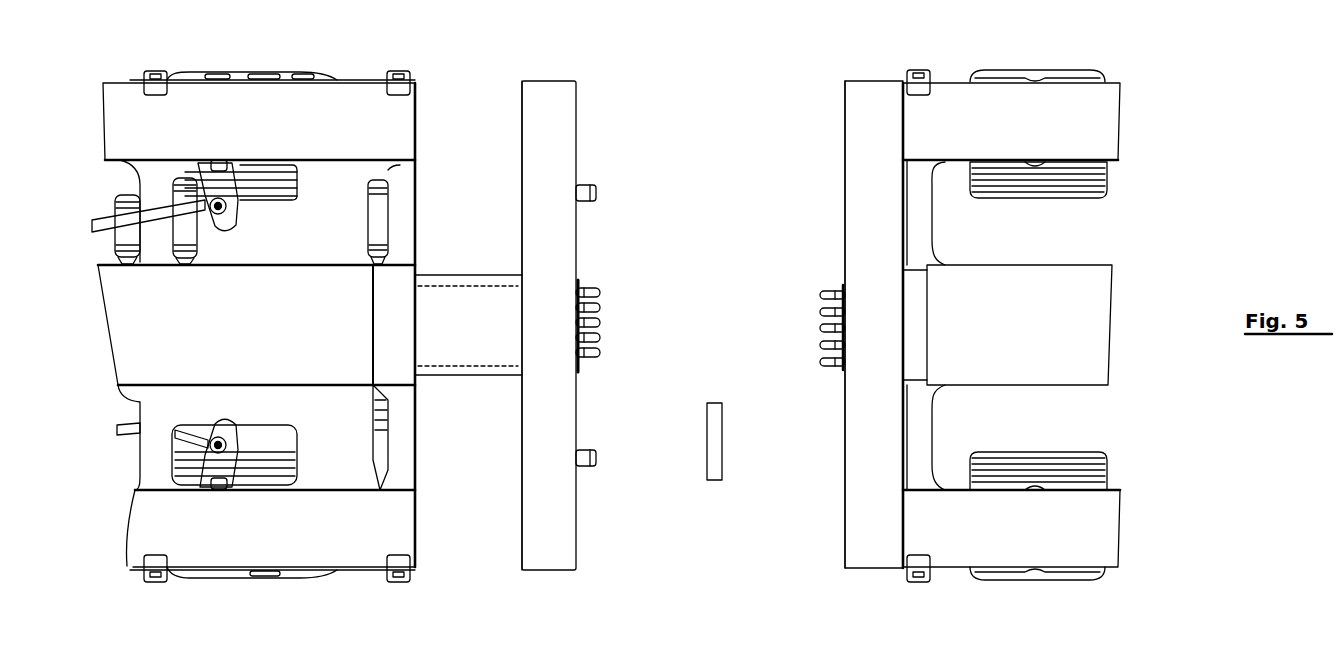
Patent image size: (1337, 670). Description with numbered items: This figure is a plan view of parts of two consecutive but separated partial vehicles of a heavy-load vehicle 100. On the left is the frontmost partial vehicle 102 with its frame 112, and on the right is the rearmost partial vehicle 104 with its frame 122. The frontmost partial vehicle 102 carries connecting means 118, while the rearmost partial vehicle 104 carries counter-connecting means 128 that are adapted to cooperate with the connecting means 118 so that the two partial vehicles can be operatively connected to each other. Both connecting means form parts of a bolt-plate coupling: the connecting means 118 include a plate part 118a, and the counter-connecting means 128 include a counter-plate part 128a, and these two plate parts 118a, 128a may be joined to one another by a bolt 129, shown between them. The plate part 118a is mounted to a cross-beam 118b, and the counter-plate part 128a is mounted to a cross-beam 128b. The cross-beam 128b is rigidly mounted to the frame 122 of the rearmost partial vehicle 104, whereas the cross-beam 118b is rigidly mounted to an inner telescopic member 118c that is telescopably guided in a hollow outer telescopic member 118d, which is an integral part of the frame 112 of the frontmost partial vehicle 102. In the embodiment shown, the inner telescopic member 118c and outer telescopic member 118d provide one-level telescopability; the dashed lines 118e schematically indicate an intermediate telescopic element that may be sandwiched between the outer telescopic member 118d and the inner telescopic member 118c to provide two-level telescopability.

The heavy-load vehicle 100 is at (1185, 150).
The frontmost partial vehicle 102 is at (160, 530).
The rearmost partial vehicle 104 is at (1085, 540).
The frame 112 is at (128, 107).
The connecting means 118 is at (548, 105).
The plate part 118a is at (588, 320).
The cross-beam 118b is at (548, 160).
The inner telescopic member 118c is at (452, 275).
The outer telescopic member 118d is at (278, 334).
The intermediate telescopic element 118e is at (468, 365).
The frame 122 is at (1085, 115).
The counter-connecting means 128 is at (872, 107).
The counter-plate part 128a is at (833, 328).
The cross-beam 128b is at (862, 150).
The bolt 129 is at (715, 470).